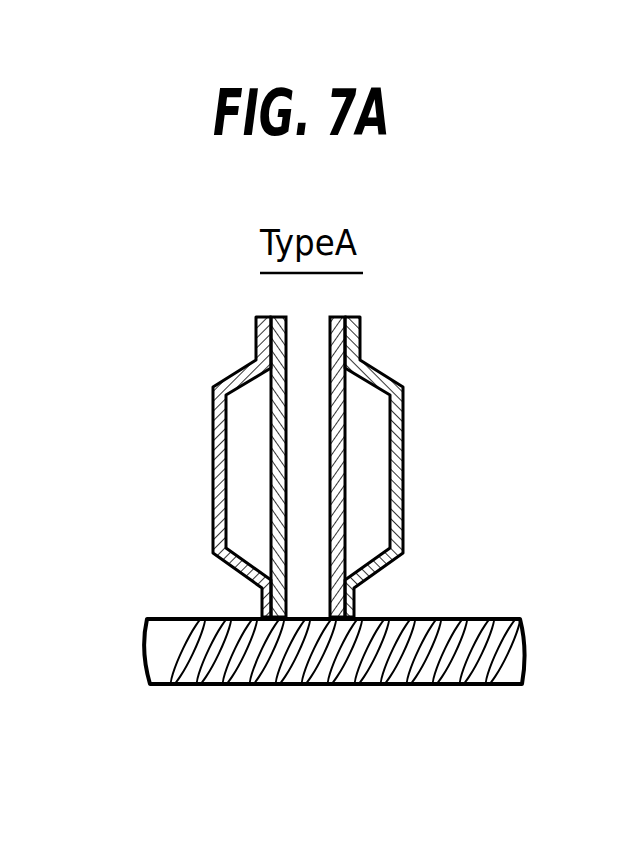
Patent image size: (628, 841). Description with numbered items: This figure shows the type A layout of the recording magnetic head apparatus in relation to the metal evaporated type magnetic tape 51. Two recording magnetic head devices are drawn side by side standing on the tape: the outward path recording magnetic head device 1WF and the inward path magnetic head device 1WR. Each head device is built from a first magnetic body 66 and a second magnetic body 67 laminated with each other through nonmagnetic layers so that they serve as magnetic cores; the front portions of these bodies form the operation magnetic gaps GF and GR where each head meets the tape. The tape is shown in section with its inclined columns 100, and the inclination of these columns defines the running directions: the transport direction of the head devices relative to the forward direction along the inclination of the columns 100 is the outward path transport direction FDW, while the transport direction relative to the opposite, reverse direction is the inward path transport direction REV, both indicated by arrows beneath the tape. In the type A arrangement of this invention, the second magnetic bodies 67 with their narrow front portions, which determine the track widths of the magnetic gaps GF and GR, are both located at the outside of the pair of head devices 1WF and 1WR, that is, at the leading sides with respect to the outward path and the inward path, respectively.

The inward path magnetic head device 1WR is at (269, 467).
The outward path recording magnetic head device 1WF is at (460, 345).
The first magnetic body 66 is at (272, 402).
The second magnetic body 67 is at (165, 381).
The metal evaporated type magnetic tape 51 is at (522, 631).
The columns 100 is at (492, 655).
The operation magnetic gap GR is at (268, 620).
The operation magnetic gap GF is at (375, 628).
The outward path transport direction FDW is at (400, 714).
The inward path transport direction REV is at (273, 747).